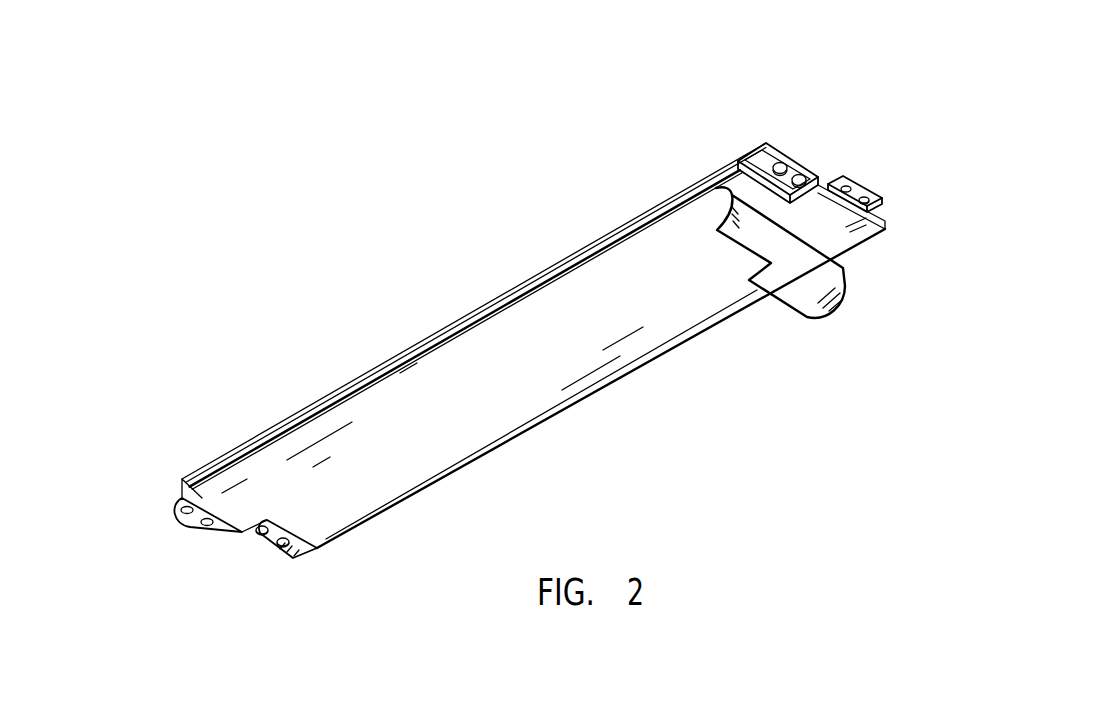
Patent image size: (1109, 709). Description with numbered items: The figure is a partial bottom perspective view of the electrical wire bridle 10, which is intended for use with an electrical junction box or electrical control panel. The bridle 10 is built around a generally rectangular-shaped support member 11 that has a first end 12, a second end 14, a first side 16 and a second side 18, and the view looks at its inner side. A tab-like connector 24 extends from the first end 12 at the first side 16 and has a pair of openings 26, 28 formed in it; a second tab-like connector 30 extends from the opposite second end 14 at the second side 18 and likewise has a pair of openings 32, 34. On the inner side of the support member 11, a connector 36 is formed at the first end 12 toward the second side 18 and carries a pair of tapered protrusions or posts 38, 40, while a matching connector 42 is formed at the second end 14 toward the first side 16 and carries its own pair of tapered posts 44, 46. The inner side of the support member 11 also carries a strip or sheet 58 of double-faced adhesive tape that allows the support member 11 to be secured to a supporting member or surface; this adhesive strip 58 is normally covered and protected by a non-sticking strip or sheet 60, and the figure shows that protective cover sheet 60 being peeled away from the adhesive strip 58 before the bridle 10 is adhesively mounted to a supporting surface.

The electrical wire bridle 10 is at (500, 270).
The support member 11 is at (360, 377).
The first end 12 is at (203, 501).
The second end 14 is at (766, 143).
The first side 16 is at (583, 398).
The second side 18 is at (433, 340).
The tab-like connector 24 is at (188, 528).
The opening 26 is at (178, 508).
The opening 28 is at (208, 528).
The tab-like connector 30 is at (877, 178).
The opening 32 is at (846, 186).
The opening 34 is at (878, 205).
The connector 36 is at (270, 548).
The tapered post 38 is at (288, 545).
The tapered post 40 is at (262, 533).
The connector 42 is at (795, 166).
The tapered post 44 is at (795, 182).
The tapered post 46 is at (766, 165).
The double-faced adhesive strip 58 is at (843, 222).
The non-sticking cover sheet 60 is at (797, 278).